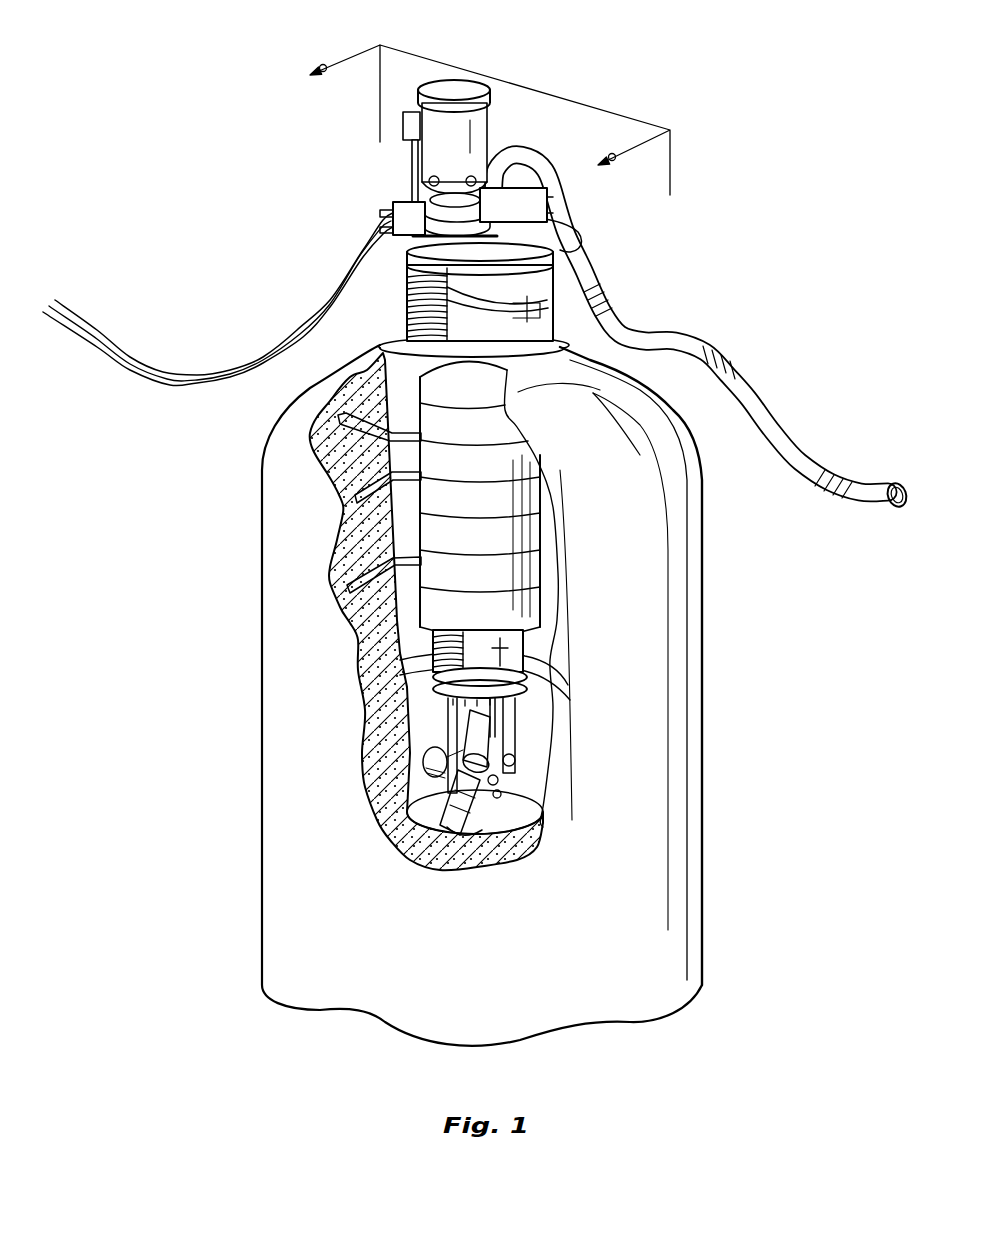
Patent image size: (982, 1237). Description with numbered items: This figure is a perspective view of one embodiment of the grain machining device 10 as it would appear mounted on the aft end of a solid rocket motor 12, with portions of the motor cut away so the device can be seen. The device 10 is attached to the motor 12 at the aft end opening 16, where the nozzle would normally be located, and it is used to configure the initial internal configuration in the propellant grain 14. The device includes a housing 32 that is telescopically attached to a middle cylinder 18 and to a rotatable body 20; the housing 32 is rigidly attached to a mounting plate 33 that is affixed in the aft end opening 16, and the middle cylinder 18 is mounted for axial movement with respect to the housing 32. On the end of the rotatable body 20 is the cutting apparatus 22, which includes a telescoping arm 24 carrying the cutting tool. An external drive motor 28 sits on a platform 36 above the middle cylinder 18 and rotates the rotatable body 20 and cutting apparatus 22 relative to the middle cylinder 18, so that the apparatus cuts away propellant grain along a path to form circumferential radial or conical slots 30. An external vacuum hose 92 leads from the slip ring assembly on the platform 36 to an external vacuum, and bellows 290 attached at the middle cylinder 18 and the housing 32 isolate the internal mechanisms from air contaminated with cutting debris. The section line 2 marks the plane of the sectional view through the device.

The section line 2- 2 is at (487, 117).
The grain machining device 10 is at (340, 202).
The solid rocket motor 12 is at (702, 620).
The propellant grain 14 is at (317, 450).
The aft end opening 16 is at (357, 360).
The middle cylinder 18 is at (586, 298).
The rotatable body 20 is at (533, 698).
The cutting apparatus 22 is at (530, 735).
The telescoping arm 24 is at (543, 822).
The external drive motor 28 is at (465, 90).
The circumferential radial slots 30 is at (338, 527).
The housing 32 is at (505, 493).
The mounting plate 33 is at (540, 373).
The platform 36 is at (556, 263).
The external vacuum hose 92 is at (682, 346).
The bellows 290 is at (402, 307).